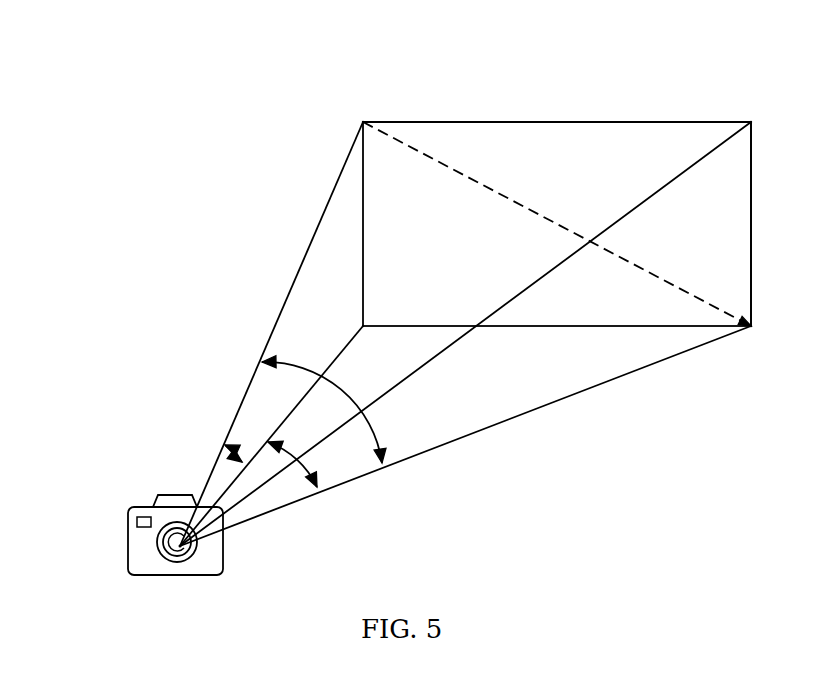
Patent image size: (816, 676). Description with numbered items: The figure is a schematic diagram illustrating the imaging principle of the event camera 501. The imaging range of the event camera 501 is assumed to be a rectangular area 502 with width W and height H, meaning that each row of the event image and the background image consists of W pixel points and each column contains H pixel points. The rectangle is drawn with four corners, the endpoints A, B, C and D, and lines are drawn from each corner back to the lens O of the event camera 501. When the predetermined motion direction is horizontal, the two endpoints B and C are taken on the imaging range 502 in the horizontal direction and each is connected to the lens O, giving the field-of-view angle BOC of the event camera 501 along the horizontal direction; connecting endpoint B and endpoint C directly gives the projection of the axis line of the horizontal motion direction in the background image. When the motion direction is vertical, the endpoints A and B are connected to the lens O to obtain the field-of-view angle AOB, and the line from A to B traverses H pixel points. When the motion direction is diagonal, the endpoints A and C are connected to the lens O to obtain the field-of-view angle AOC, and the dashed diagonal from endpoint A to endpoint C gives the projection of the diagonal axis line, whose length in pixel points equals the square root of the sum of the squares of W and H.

The event camera 501 is at (124, 534).
The imaging range 502 is at (557, 173).
The lens O is at (186, 549).
The width W is at (557, 107).
The height H is at (764, 224).
The endpoint A is at (351, 110).
The endpoint B is at (350, 314).
The endpoint C is at (764, 314).
The top-right corner of screen D is at (763, 110).